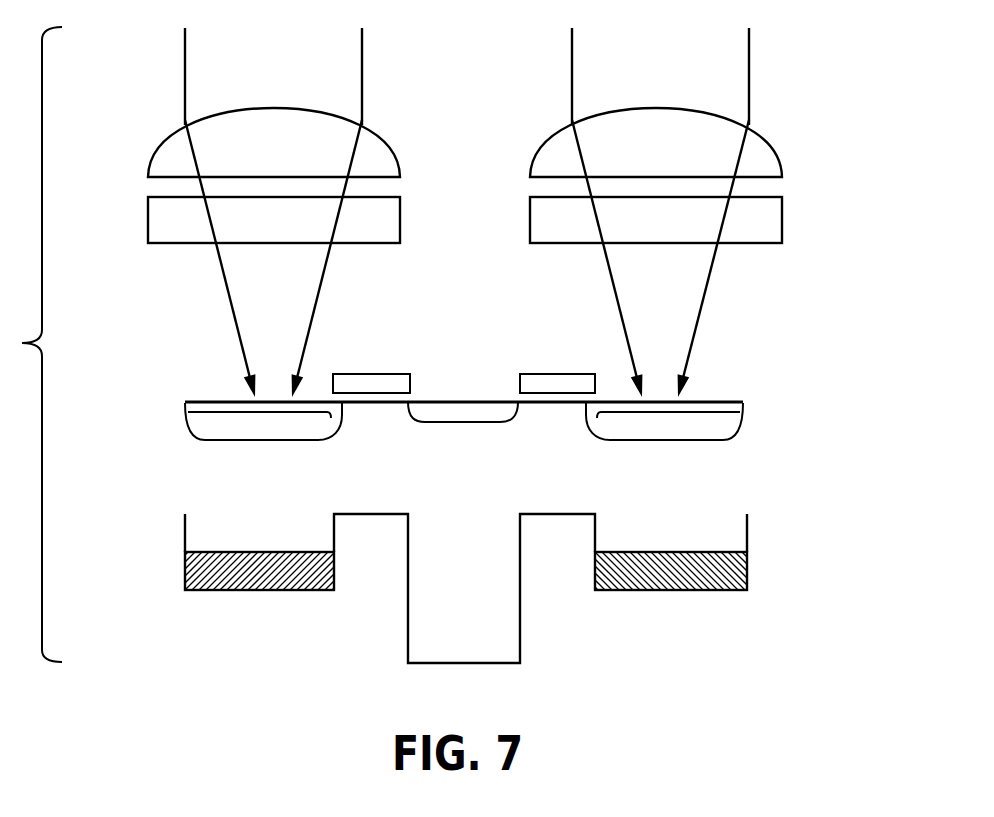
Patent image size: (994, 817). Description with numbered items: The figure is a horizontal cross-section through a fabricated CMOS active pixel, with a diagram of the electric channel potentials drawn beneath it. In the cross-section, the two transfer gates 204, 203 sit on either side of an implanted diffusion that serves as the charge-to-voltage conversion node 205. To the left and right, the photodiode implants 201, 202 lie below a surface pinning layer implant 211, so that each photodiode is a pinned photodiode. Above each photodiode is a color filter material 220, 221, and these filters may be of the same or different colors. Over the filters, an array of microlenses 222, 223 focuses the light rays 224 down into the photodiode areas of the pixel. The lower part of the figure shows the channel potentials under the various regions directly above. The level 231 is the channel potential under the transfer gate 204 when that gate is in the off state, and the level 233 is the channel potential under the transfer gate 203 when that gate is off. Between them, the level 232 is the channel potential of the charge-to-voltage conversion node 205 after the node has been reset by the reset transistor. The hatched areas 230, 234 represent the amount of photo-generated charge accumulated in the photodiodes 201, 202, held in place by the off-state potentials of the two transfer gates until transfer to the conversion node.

The photodiode implant 201 is at (208, 425).
The photodiode implant 202 is at (716, 424).
The transfer gate 203 is at (558, 374).
The transfer gate 204 is at (370, 374).
The charge-to-voltage conversion node 205 is at (465, 412).
The surface pinning layer implant 211 is at (183, 402).
The color filter material 220 is at (148, 222).
The color filter material 221 is at (782, 218).
The microlens 222 is at (272, 103).
The microlens 223 is at (659, 103).
The light rays 224 is at (185, 63).
The photo-generated charge 230 is at (238, 570).
The channel potential under the transfer gate 231 is at (378, 514).
The channel potential of the charge-to-voltage conversion node 232 is at (465, 663).
The channel potential under the transfer gate 233 is at (562, 514).
The photo-generated charge 234 is at (660, 585).